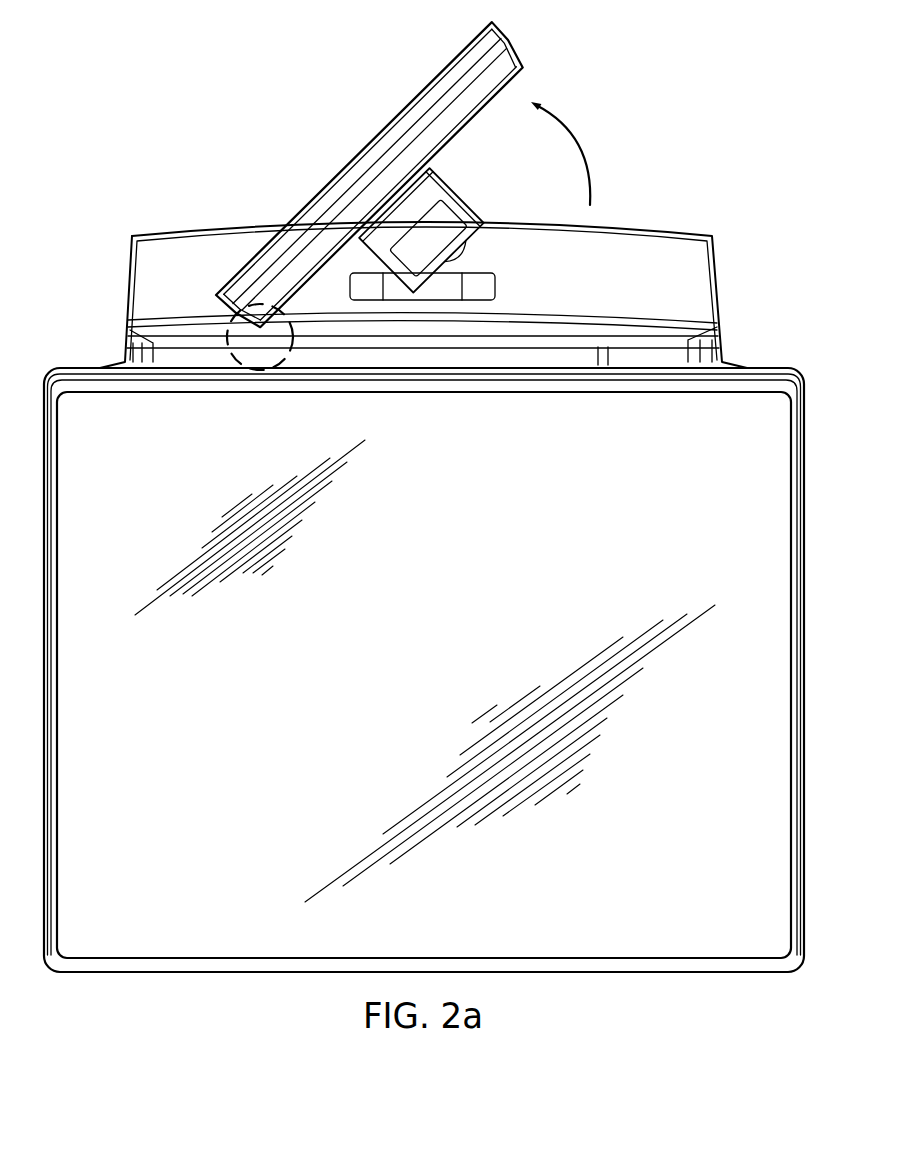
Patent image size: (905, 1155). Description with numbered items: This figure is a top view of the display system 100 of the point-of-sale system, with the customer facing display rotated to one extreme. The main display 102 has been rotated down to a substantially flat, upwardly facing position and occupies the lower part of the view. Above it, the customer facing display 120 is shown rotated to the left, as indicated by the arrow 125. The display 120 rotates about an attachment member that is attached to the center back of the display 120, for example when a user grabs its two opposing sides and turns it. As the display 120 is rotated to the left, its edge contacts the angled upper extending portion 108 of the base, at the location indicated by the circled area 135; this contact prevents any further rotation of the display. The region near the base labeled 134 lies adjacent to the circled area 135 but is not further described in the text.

The display system 100 is at (186, 70).
The main display 102 is at (205, 977).
The angled upper extending portion 108 is at (713, 283).
The customer facing display 120 is at (370, 199).
The arrow 125 is at (576, 150).
The slot 134 is at (192, 364).
The circled area 135 is at (300, 364).